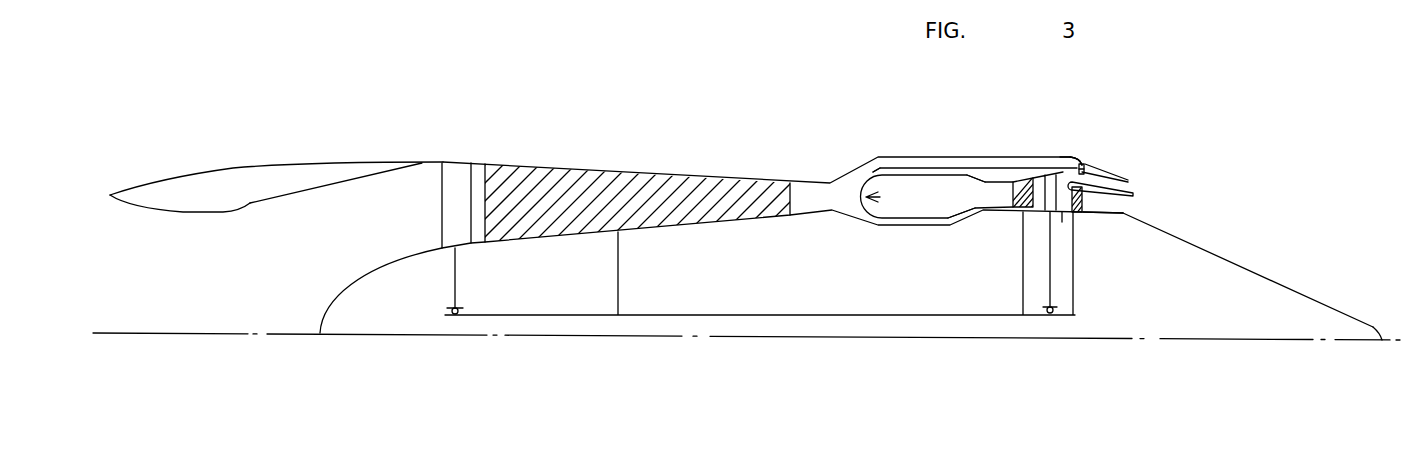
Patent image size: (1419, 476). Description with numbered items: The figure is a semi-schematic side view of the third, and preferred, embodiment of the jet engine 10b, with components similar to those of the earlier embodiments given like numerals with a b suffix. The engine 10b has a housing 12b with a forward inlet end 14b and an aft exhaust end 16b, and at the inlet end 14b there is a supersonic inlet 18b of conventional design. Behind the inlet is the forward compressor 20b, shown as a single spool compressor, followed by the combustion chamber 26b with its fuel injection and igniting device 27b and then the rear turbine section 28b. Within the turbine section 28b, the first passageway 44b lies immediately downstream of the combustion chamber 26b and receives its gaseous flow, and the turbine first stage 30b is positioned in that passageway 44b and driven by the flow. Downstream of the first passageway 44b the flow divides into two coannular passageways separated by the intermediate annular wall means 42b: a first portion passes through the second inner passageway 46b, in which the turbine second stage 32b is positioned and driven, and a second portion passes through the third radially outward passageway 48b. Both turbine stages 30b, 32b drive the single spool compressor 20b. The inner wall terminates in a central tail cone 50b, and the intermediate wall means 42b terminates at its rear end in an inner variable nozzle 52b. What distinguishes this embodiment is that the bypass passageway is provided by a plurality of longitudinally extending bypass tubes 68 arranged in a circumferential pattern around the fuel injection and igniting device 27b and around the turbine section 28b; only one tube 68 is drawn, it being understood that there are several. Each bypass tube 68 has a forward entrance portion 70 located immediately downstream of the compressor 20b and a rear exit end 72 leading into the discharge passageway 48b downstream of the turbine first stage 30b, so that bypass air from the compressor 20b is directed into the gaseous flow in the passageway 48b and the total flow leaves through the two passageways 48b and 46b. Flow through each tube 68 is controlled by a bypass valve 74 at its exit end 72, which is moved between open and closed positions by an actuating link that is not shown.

The engine 10b is at (792, 138).
The housing 12b is at (920, 135).
The forward inlet end 14b is at (328, 140).
The aft exhaust end 16b is at (1253, 233).
The supersonic inlet 18b is at (183, 233).
The compressor 20b is at (606, 190).
The combustion chamber 26b is at (903, 208).
The fuel injection and igniting device 27b is at (880, 193).
The turbine section 28b is at (1035, 145).
The turbine first stage 30b is at (1022, 203).
The turbine second stage 32b is at (1080, 213).
The intermediate annular wall means 42b is at (1095, 199).
The first passageway 44b is at (987, 197).
The second inner passageway 46b is at (1062, 212).
The third radially outward passageway 48b is at (1125, 180).
The central tail cone 50b is at (1340, 320).
The inner variable nozzle 52b is at (1132, 193).
The bypass tube 68 is at (933, 160).
The forward entrance portion 70 is at (867, 170).
The rear exit end 72 is at (1067, 160).
The bypass valve 74 is at (1090, 163).